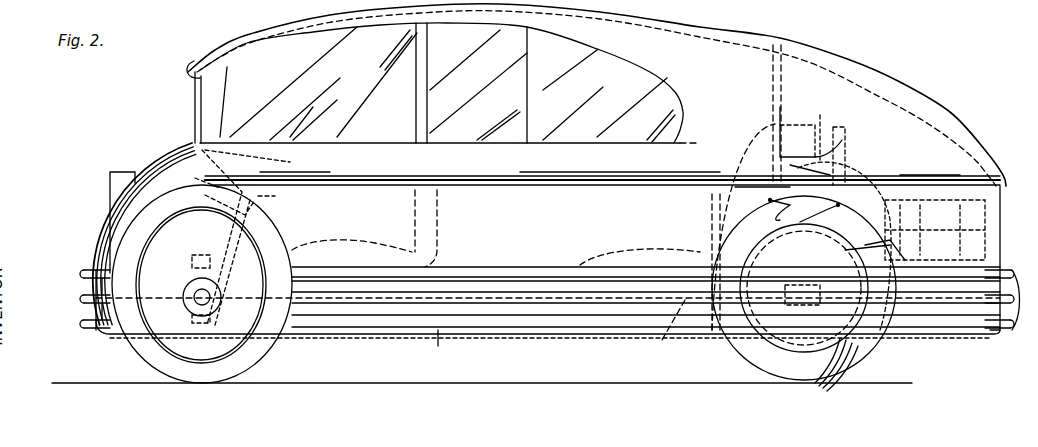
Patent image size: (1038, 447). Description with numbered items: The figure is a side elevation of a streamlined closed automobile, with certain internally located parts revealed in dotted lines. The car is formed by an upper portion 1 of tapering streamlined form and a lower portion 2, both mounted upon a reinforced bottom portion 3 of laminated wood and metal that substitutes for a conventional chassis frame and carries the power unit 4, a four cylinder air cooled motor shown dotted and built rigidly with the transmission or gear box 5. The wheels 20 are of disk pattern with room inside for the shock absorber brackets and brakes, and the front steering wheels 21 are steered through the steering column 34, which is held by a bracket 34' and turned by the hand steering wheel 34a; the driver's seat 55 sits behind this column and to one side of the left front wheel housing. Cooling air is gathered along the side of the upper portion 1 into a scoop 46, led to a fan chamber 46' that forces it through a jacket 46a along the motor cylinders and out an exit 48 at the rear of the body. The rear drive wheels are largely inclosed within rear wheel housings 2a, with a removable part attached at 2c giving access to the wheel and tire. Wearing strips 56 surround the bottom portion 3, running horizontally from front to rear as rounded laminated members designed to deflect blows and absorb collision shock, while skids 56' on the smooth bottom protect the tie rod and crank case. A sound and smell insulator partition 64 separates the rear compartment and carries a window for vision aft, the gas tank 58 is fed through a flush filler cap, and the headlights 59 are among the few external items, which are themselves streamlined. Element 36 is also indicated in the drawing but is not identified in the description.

The upper portion of the automobile body 1 is at (925, 112).
The lower portion of the body 2 is at (575, 228).
The rear wheel housings 2a is at (707, 275).
The attachment point of removable part 2c is at (804, 215).
The reinforced bottom portion 3 is at (474, 181).
The power unit 4 is at (790, 8).
The transmission or gear box 5 is at (850, 107).
The wheels 20 is at (858, 340).
The front steering wheels 21 is at (158, 354).
The steering column 34 is at (368, 237).
The bracket 34' is at (196, 175).
The hand steering wheel 34a is at (300, 148).
The running board 36 is at (449, 344).
The scoop 46 is at (811, 123).
The fan chamber 46' is at (844, 223).
The jacket 46a is at (930, 165).
The exit 48 is at (1000, 205).
The driver's seat 55 is at (376, 244).
The wearing strips 56 is at (550, 312).
The skids 56' is at (962, 345).
The gas tank 58 is at (740, 178).
The headlights 59 is at (120, 172).
The sound and smell insulator partition 64 is at (770, 105).